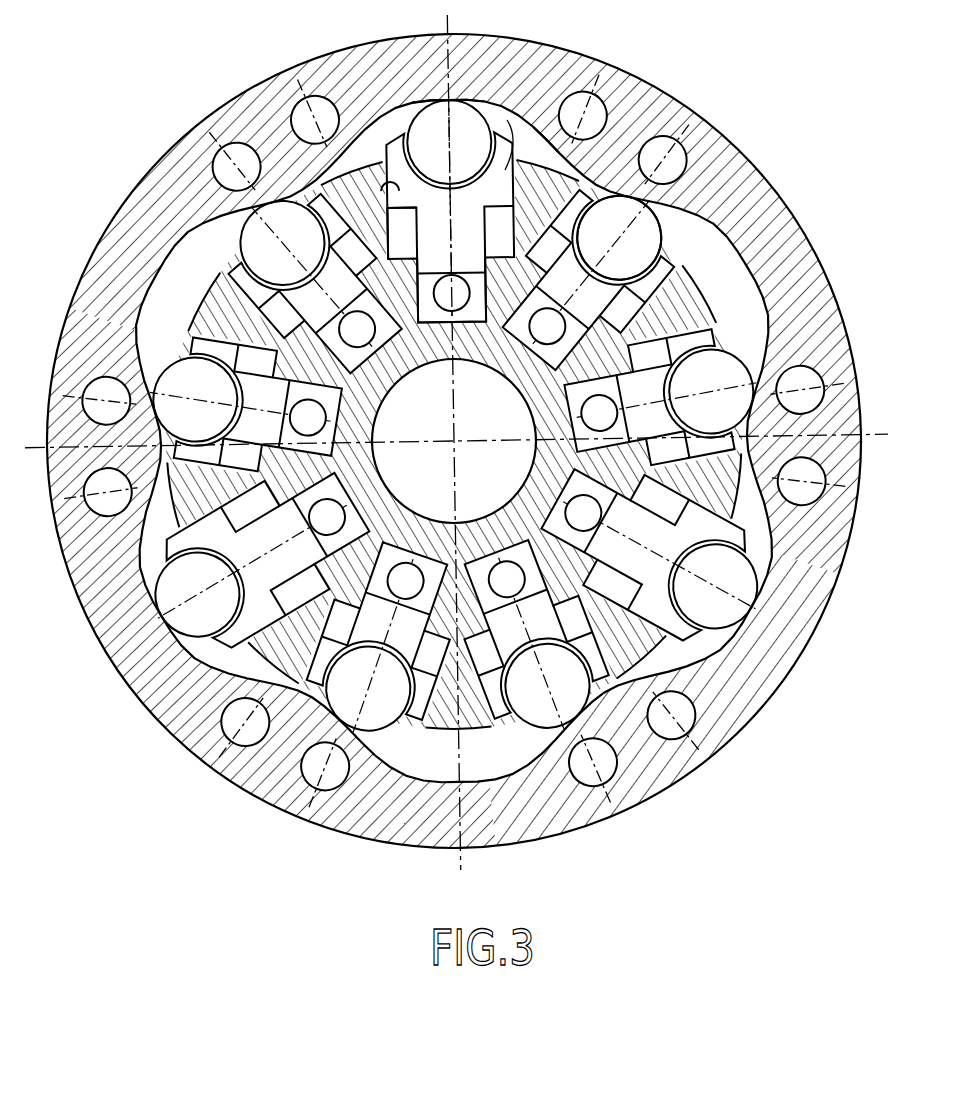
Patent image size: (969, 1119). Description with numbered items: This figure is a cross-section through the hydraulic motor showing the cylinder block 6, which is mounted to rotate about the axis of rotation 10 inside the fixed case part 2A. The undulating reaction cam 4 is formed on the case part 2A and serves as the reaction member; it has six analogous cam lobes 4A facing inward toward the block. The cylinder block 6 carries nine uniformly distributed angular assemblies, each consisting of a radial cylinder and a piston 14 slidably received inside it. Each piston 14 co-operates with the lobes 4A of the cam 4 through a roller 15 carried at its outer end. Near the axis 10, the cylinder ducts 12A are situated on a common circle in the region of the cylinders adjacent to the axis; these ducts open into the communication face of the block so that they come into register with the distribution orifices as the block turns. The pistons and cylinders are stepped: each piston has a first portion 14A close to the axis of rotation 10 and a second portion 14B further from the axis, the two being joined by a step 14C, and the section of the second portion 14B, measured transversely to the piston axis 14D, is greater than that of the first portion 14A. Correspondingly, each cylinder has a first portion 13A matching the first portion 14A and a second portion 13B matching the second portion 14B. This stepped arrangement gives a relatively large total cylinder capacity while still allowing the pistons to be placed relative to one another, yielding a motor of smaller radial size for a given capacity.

The case part 2A is at (787, 633).
The reaction cam 4 is at (742, 270).
The cam lobe 4A is at (788, 557).
The cylinder block 6 is at (381, 464).
The axis of rotation 10 is at (460, 443).
The cylinder duct 12A is at (560, 400).
The first portion of cylinder 13A is at (479, 290).
The second portion of cylinder 13B is at (395, 196).
The radial piston 14 is at (585, 307).
The first portion of piston 14A is at (476, 252).
The second portion of piston 14B is at (535, 100).
The step 14C is at (536, 222).
The piston axis 14D is at (447, 70).
The roller 15 is at (631, 252).